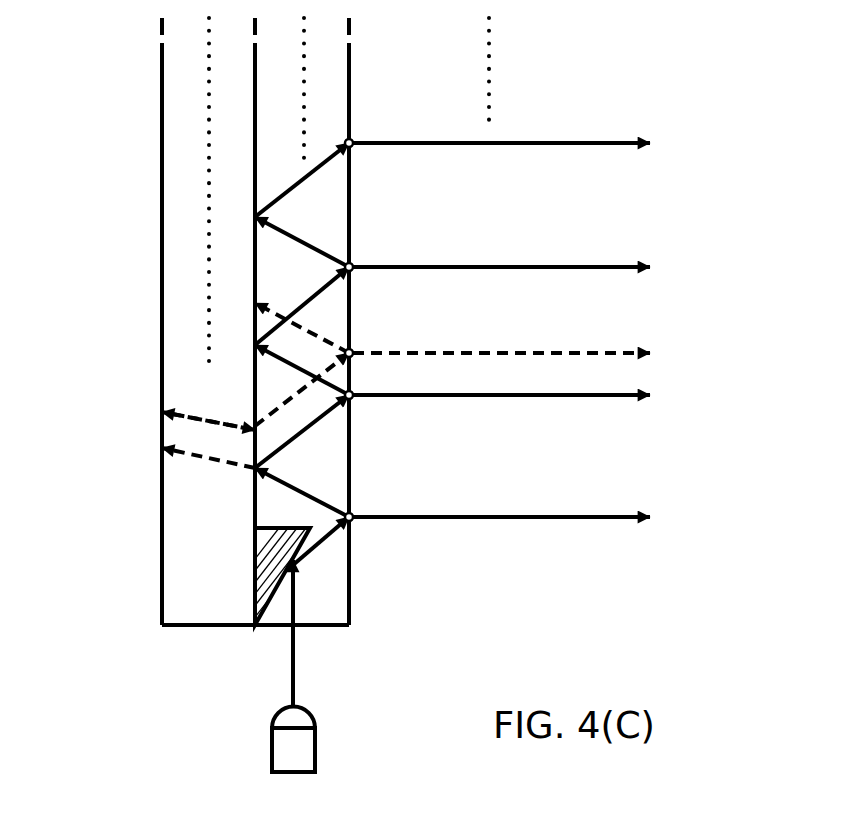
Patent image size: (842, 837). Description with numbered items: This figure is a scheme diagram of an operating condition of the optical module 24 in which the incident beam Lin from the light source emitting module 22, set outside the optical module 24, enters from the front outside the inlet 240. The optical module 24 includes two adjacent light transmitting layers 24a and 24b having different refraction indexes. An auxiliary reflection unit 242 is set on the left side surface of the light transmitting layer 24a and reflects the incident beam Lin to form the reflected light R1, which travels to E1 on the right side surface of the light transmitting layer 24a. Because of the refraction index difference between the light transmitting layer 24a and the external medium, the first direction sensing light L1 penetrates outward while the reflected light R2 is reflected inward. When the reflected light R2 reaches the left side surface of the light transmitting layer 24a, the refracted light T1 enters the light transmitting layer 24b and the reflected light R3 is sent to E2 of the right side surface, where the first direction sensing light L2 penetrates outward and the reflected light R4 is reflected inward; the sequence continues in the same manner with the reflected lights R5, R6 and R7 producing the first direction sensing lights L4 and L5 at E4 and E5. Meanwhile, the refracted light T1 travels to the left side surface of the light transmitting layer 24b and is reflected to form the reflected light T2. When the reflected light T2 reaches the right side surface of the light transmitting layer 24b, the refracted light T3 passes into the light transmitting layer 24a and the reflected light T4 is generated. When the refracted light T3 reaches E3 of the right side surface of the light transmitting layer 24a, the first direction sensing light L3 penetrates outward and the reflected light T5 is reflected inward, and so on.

The light source emitting module 22 is at (313, 728).
The optical module 24 is at (80, 208).
The light transmitting layer 24a is at (268, 258).
The light transmitting layer 24b is at (193, 323).
The inlet 240 is at (255, 625).
The auxiliary reflection unit 242 is at (277, 545).
The incident beam Lin is at (314, 633).
The reflected light R1 is at (321, 549).
The reflected light R2 is at (302, 492).
The reflected light R3 is at (302, 431).
The reflected light R4 is at (302, 368).
The reflected light R5 is at (302, 306).
The reflected light R6 is at (302, 242).
The reflected light R7 is at (302, 180).
The refracted light T1 is at (208, 469).
The reflected light T2 is at (197, 440).
The refracted light T3 is at (302, 389).
The reflected light T4 is at (212, 409).
The reflected light T5 is at (302, 328).
The exit point E1 is at (367, 505).
The exit point E2 is at (366, 408).
The exit point E3 is at (365, 340).
The exit point E4 is at (365, 257).
The exit point E5 is at (363, 135).
The first direction sensing light L1 is at (519, 520).
The first direction sensing light L2 is at (519, 398).
The first direction sensing light L3 is at (519, 358).
The first direction sensing light L4 is at (519, 271).
The first direction sensing light L5 is at (519, 148).